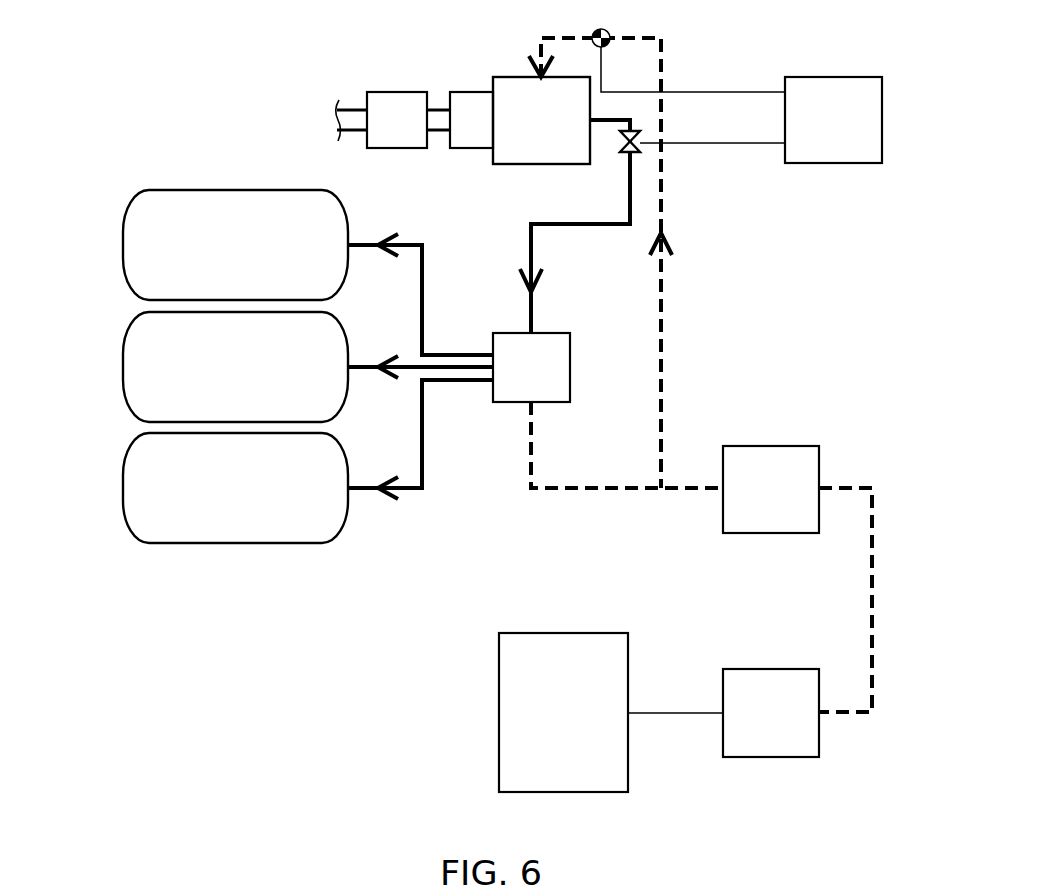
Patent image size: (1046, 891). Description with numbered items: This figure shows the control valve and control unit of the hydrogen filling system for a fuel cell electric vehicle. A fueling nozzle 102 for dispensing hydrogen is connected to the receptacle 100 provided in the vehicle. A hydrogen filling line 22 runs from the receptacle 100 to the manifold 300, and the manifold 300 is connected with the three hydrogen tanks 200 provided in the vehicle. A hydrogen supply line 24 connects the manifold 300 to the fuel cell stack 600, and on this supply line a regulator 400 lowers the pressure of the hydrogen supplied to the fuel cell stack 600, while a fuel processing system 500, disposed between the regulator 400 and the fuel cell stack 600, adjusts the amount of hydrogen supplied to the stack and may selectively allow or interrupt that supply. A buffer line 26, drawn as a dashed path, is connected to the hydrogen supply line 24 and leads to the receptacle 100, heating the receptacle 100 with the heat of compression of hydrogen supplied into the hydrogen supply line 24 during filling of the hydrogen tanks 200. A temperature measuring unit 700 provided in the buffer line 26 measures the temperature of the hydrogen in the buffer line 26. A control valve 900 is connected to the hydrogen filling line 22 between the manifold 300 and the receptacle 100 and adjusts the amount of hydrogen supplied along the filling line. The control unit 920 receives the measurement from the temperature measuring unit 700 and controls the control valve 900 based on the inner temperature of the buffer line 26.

The fueling nozzle 102 is at (398, 92).
The receptacle 100 is at (521, 77).
The buffer line 26 is at (664, 103).
The temperature measuring unit 700 is at (606, 30).
The control unit 920 is at (834, 77).
The hydrogen filling line 22 is at (632, 202).
The control valve 900 is at (641, 143).
The hydrogen tanks 200 is at (120, 247).
The manifold 300 is at (497, 333).
The hydrogen supply line 24 is at (632, 490).
The regulator 400 is at (770, 446).
The fuel processing system 500 is at (770, 669).
The fuel cell stack 600 is at (562, 633).